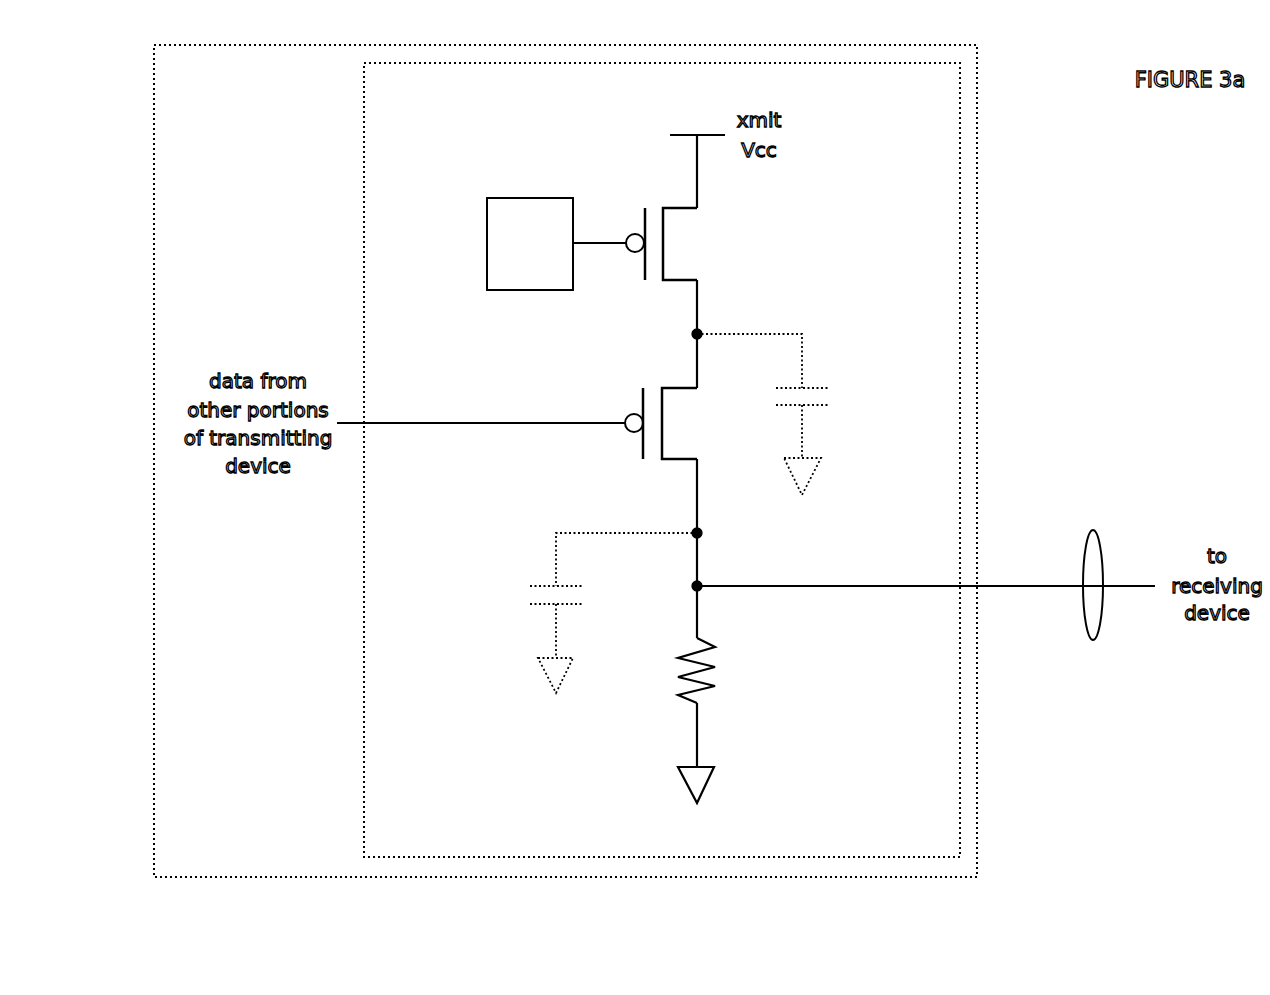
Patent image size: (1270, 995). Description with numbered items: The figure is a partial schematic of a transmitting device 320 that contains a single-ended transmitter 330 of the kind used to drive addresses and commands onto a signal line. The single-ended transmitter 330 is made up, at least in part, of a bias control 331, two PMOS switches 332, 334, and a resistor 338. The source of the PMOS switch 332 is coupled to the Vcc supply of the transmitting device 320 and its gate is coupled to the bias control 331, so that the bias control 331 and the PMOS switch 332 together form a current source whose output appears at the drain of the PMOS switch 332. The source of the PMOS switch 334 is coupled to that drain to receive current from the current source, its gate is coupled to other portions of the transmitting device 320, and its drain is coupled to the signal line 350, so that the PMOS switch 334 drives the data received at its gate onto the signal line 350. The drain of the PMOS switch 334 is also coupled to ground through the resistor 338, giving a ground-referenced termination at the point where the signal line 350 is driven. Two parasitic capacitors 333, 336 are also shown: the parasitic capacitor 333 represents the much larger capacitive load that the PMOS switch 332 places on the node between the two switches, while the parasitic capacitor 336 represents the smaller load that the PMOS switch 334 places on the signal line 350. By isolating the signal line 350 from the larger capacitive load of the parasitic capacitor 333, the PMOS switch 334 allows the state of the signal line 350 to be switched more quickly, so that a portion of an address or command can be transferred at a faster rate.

The transmitting device 320 is at (565, 461).
The single-ended transmitter 330 is at (662, 460).
The bias control 331 is at (556, 244).
The PMOS switch 332 is at (671, 244).
The parasitic capacitor 333 is at (820, 388).
The PMOS switch 334 is at (671, 423).
The parasitic capacitor 336 is at (540, 587).
The resistor 338 is at (682, 658).
The signal line 350 is at (1093, 530).